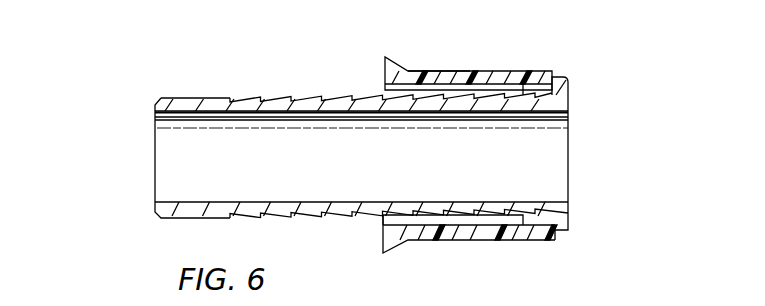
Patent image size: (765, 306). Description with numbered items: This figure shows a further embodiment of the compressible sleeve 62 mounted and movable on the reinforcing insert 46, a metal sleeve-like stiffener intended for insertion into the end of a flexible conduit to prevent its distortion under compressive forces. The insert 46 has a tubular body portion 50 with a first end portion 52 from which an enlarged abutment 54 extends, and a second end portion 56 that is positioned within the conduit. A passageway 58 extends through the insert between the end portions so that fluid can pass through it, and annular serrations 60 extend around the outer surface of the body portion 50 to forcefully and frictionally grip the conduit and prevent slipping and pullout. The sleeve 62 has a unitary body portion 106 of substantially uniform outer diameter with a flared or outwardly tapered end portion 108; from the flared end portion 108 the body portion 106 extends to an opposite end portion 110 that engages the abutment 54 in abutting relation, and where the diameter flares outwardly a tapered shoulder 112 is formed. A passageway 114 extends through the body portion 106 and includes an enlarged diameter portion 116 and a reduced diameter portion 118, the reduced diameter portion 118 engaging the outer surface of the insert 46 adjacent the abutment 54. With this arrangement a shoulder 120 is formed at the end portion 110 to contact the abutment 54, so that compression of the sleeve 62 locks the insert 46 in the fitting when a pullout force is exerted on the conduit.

The reinforcing insert 46 is at (155, 137).
The tubular body portion 50 is at (406, 108).
The first end portion 52 is at (569, 95).
The abutment 54 is at (560, 80).
The second end portion 56 is at (216, 97).
The passageway 58 is at (355, 184).
The serrations 60 is at (292, 96).
The compressible sleeve 62 is at (437, 52).
The unitary body portion 106 is at (493, 70).
The flared end portion 108 is at (385, 62).
The opposite end portion 110 is at (541, 70).
The tapered shoulder 112 is at (393, 248).
The passageway 114 is at (372, 224).
The enlarged diameter portion 116 is at (474, 228).
The reduced diameter portion 118 is at (537, 228).
The shoulder 120 is at (545, 88).